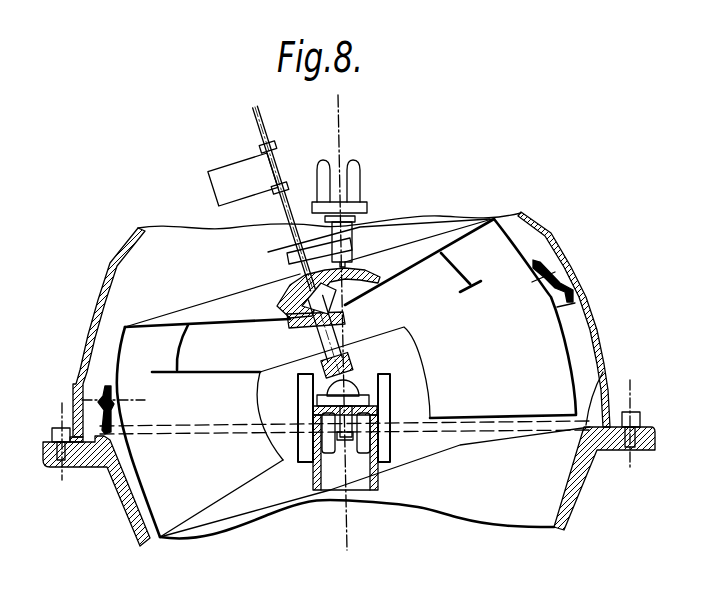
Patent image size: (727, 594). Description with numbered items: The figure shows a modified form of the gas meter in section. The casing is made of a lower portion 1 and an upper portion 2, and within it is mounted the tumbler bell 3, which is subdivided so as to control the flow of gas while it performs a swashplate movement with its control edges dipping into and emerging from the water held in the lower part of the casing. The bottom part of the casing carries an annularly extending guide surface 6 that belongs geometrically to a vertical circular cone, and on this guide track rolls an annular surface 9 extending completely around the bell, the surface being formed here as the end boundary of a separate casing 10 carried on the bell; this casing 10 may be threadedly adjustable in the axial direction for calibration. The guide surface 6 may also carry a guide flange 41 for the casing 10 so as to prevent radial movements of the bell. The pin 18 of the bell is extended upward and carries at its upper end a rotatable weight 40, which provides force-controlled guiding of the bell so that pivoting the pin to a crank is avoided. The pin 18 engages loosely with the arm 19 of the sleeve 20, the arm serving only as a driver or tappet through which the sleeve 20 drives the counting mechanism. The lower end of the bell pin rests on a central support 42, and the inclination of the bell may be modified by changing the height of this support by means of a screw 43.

The lower portion of the casing 1 is at (113, 504).
The upper portion of the casing 2 is at (103, 293).
The tumbler bell 3 is at (410, 263).
The guide surface 6 is at (97, 460).
The annular surface 9 is at (575, 287).
The casing of the bell 10 is at (103, 419).
The pin 18 is at (367, 243).
The arm 19 is at (318, 253).
The sleeve 20 is at (350, 243).
The rotatable weight 40 is at (220, 182).
The guide flange 41 is at (593, 425).
The central support 42 is at (368, 397).
The screw 43 is at (345, 440).